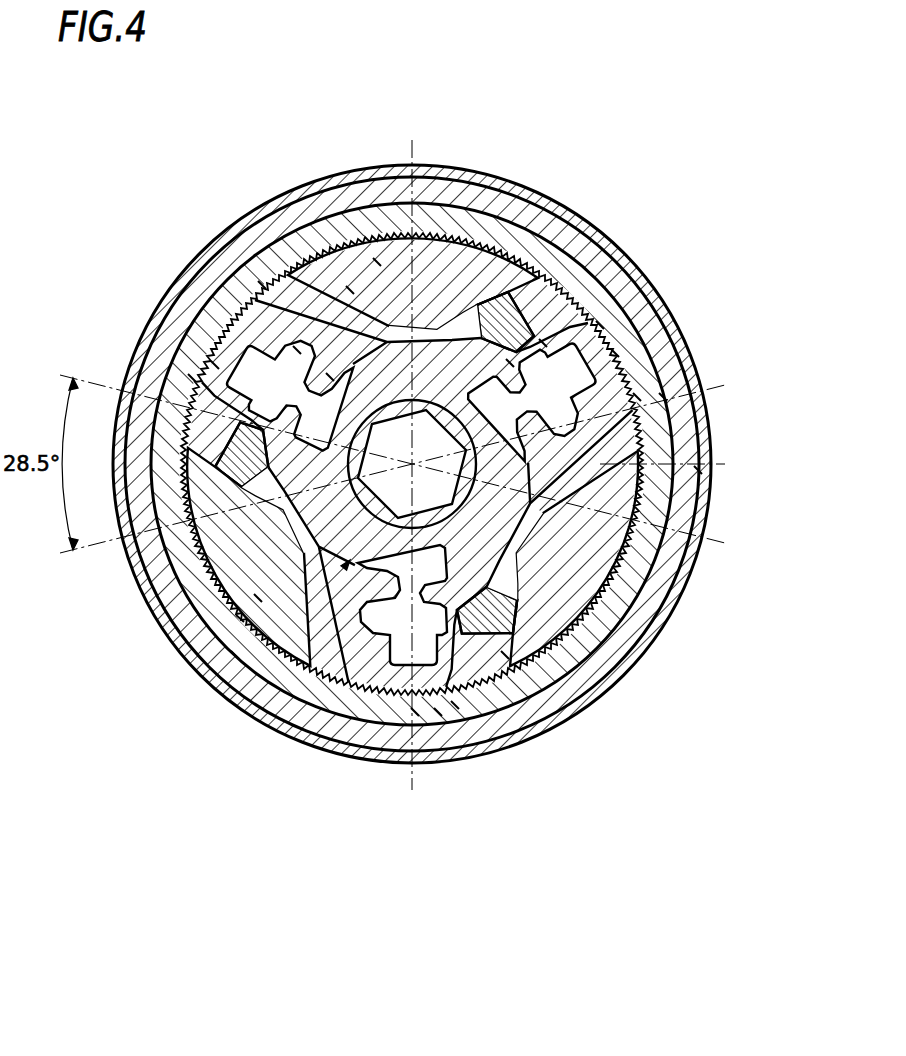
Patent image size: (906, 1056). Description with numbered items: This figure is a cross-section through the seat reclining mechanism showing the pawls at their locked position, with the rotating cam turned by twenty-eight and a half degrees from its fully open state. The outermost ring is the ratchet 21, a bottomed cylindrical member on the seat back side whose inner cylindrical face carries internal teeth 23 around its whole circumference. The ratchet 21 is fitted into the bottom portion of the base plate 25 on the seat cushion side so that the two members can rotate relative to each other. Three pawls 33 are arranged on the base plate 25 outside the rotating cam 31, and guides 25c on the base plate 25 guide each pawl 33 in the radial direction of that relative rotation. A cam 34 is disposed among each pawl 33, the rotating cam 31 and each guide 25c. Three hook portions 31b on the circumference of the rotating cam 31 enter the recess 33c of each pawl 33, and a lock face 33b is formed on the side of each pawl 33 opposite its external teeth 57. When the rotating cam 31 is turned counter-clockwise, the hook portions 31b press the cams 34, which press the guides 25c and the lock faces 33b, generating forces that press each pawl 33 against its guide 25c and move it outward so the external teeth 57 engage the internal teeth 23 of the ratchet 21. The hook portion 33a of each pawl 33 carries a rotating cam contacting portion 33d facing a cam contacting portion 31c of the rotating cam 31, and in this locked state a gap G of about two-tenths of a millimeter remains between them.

The ratchet 21 is at (698, 558).
The internal teeth 23 is at (662, 435).
The base plate 25 is at (688, 495).
The guides 25c is at (377, 262).
The rotating cam 31 is at (345, 560).
The hook portions 31b is at (215, 365).
The cam contacting portion 31c is at (330, 377).
The pawls 33 is at (245, 320).
The hook portion 33a is at (297, 350).
The lock face 33b is at (192, 378).
The recess 33c is at (262, 285).
The rotating cam contacting portion 33d is at (350, 290).
The cam 34 is at (212, 398).
The external teeth 57 is at (212, 352).
The gap G is at (350, 560).